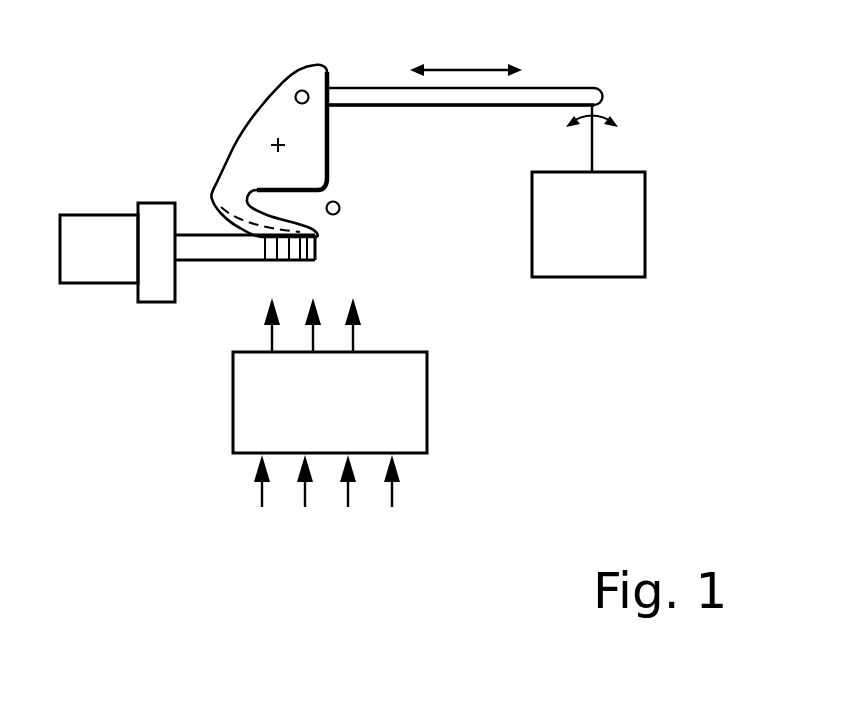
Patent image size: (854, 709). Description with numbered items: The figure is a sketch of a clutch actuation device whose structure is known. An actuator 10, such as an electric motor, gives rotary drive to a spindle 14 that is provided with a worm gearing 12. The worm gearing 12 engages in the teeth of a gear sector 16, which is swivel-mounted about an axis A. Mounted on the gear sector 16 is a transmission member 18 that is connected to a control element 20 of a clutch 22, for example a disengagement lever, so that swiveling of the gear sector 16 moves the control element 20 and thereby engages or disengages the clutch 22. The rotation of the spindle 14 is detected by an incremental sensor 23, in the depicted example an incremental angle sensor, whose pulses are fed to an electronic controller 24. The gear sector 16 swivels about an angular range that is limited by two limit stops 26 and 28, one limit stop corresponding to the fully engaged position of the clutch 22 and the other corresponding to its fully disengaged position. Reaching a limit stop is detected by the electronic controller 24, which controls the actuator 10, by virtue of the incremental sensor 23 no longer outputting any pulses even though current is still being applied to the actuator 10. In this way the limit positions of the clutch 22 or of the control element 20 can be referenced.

The actuator 10 is at (80, 265).
The worm gearing 12 is at (297, 253).
The spindle 14 is at (220, 246).
The gear sector 16 is at (246, 160).
The transmission member 18 is at (533, 92).
The control element 20 is at (592, 157).
The clutch 22 is at (569, 238).
The incremental sensor 23 is at (153, 287).
The electronic controller 24 is at (309, 413).
The limit stop 26 is at (343, 208).
The limit stop 28 is at (200, 182).
The axis A is at (287, 143).